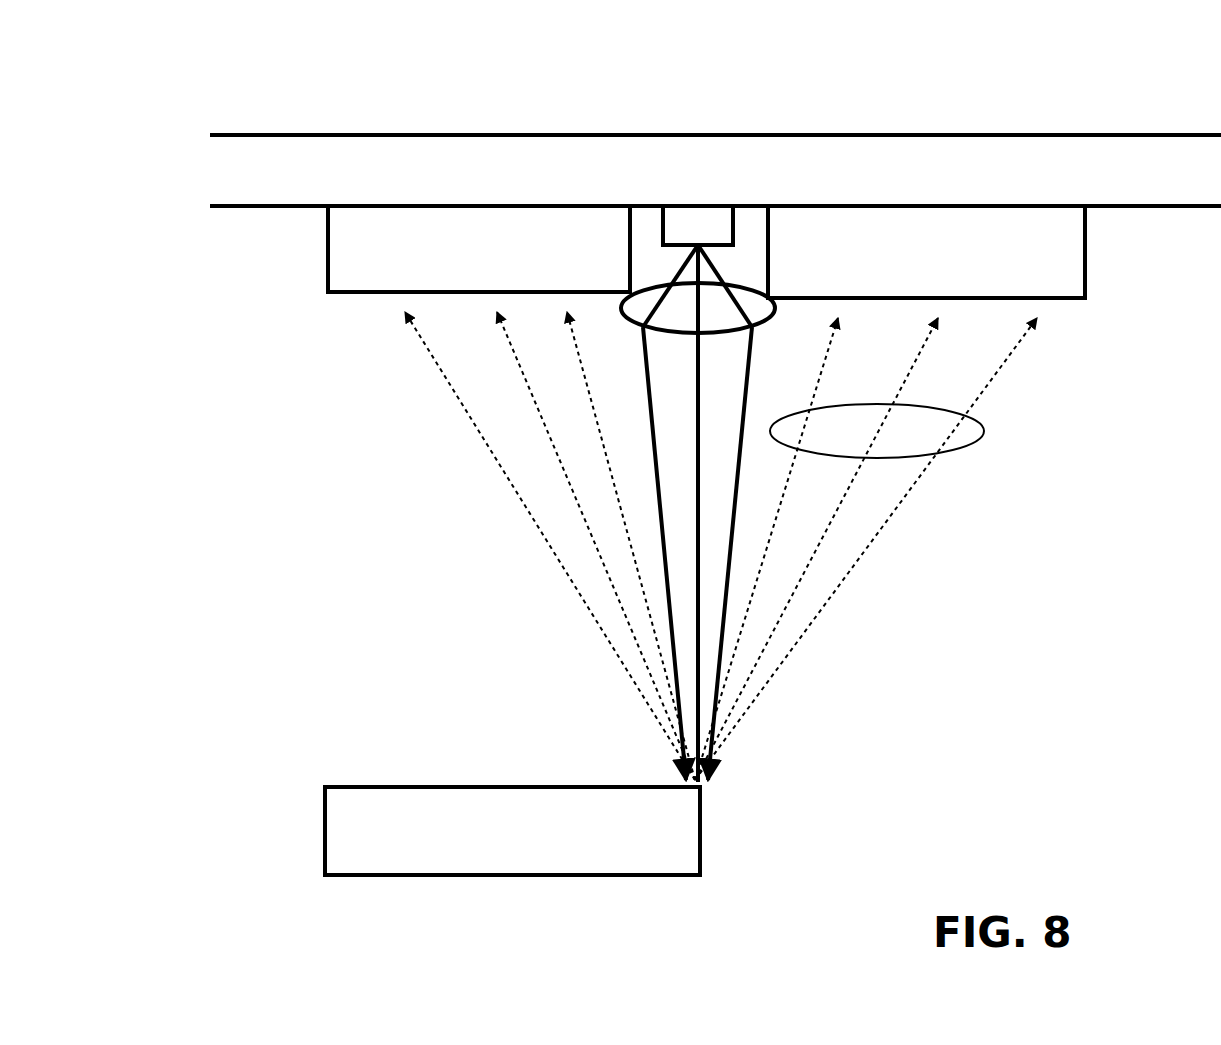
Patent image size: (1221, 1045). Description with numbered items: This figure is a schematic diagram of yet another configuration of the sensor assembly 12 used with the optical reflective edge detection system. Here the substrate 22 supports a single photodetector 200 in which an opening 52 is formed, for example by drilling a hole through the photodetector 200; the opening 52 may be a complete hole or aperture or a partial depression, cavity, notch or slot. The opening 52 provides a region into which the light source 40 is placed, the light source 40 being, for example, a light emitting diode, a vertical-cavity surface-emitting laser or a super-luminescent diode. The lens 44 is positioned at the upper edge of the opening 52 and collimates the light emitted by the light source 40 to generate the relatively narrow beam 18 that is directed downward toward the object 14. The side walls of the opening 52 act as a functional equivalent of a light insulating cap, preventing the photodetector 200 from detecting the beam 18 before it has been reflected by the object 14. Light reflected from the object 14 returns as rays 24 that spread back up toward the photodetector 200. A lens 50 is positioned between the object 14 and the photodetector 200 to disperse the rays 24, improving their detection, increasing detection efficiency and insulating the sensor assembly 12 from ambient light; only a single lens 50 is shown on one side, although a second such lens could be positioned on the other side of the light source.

The sensor assembly 12 is at (788, 337).
The object 14 is at (383, 812).
The beam 18 is at (677, 567).
The substrate 22 is at (970, 153).
The rays 24 is at (597, 627).
The light source 40 is at (753, 207).
The lens 44 is at (640, 330).
The lens 50 is at (897, 433).
The opening 52 is at (643, 240).
The photodetector 200 is at (1037, 238).